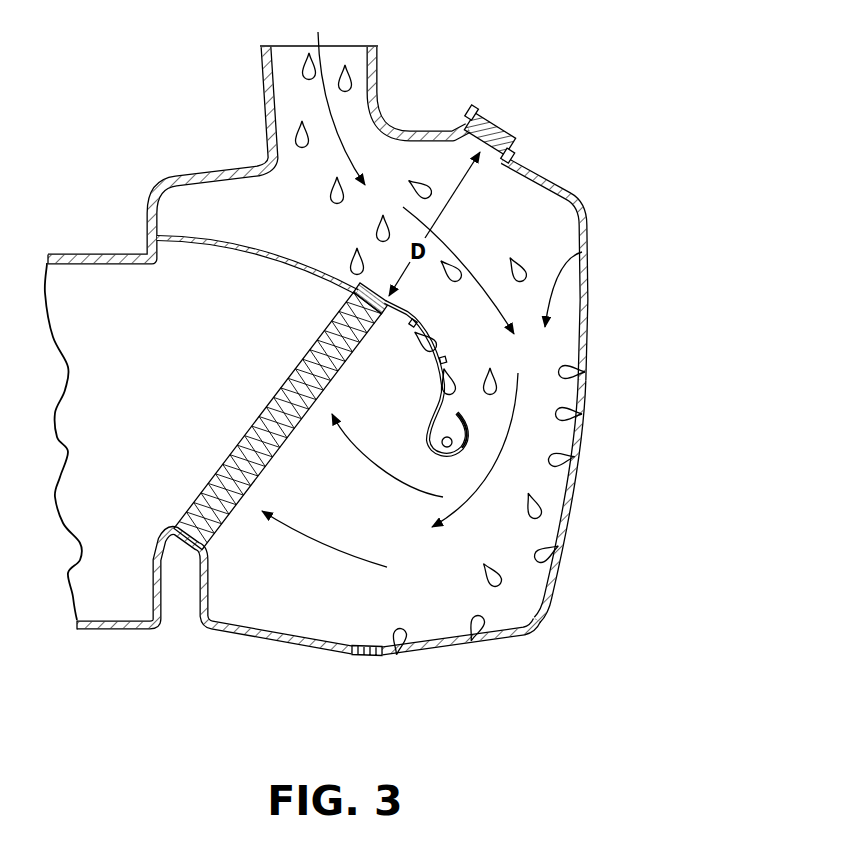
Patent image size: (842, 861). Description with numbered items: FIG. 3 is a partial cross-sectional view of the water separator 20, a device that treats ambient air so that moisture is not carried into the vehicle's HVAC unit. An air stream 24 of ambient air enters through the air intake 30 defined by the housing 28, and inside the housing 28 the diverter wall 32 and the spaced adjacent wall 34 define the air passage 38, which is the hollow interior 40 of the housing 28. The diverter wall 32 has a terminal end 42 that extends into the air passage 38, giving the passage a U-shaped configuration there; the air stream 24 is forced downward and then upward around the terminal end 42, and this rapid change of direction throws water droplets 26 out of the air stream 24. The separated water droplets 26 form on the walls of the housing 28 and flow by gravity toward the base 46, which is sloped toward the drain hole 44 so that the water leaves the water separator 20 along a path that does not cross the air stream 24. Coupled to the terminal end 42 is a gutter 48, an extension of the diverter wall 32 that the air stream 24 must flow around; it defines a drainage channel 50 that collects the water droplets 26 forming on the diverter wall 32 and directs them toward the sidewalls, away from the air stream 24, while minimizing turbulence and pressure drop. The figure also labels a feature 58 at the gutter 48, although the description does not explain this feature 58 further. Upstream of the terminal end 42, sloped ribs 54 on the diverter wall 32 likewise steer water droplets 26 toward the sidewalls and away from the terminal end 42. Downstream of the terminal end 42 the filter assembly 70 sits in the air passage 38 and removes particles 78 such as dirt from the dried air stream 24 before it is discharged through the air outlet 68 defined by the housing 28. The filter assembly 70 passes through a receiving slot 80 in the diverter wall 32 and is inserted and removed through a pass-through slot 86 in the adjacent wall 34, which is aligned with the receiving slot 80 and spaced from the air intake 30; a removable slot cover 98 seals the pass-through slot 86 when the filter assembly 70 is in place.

The water separator 20 is at (183, 128).
The air stream 24 is at (448, 245).
The water droplets 26 is at (349, 84).
The housing 28 is at (597, 190).
The air intake 30 is at (349, 33).
The diverter wall 32 is at (261, 256).
The adjacent wall 34 is at (583, 328).
The air passage 38 is at (582, 252).
The hollow interior 40 is at (578, 420).
The terminal end 42 is at (417, 386).
The drain hole 44 is at (366, 656).
The base 46 is at (443, 642).
The gutter 48 is at (476, 428).
The drainage channel 50 is at (430, 423).
The rib 54 is at (446, 358).
The lip 58 is at (469, 424).
The air outlet 68 is at (102, 398).
The filter assembly 70 is at (258, 382).
The particles 78 is at (508, 217).
The receiving slot 80 is at (353, 292).
The pass-through slot 86 is at (466, 153).
The slot cover 98 is at (473, 112).